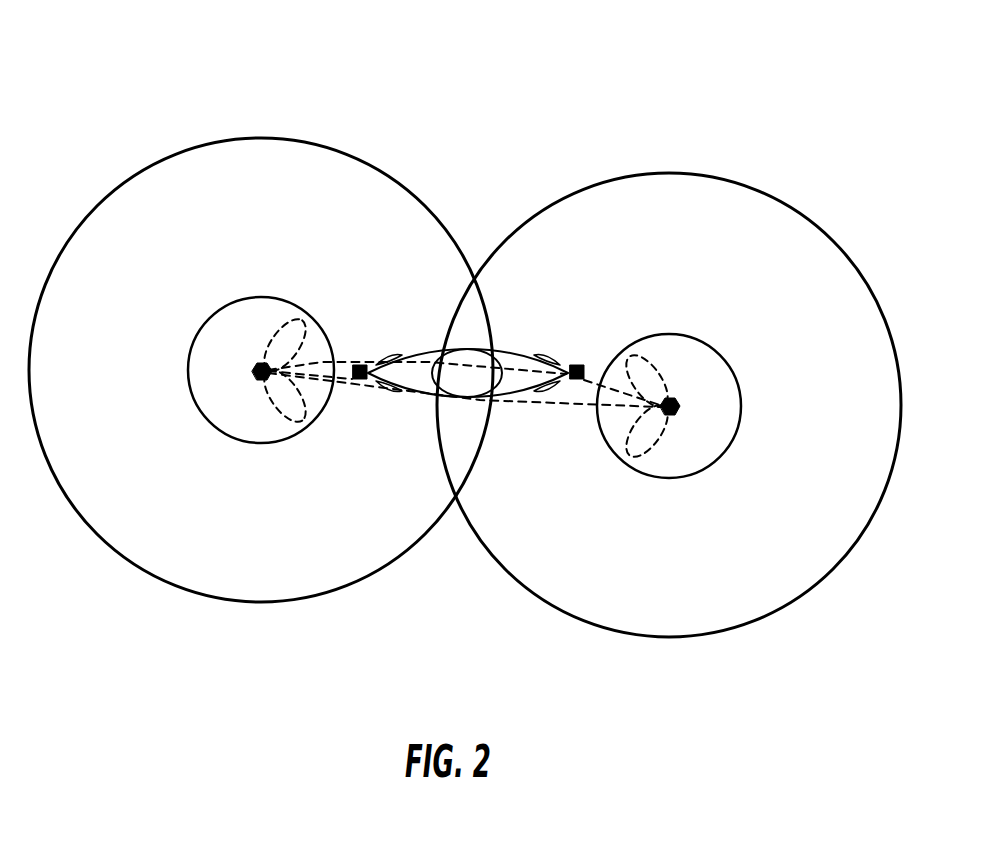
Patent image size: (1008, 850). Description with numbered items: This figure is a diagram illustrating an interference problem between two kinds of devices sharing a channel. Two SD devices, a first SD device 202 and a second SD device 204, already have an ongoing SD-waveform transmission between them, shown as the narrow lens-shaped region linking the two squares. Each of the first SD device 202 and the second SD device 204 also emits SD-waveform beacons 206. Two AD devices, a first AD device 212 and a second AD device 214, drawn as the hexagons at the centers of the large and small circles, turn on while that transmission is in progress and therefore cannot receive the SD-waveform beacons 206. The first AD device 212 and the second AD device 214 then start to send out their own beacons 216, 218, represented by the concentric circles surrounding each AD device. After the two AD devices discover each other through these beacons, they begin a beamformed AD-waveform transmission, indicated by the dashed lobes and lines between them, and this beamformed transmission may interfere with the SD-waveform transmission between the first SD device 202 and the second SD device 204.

The SD1 202 is at (362, 380).
The SD2 204 is at (577, 365).
The SD-waveform beacons 206 is at (424, 353).
The AD1 212 is at (262, 376).
The AD2 214 is at (680, 410).
The beacon 216 is at (262, 443).
The beacon 218 is at (263, 137).